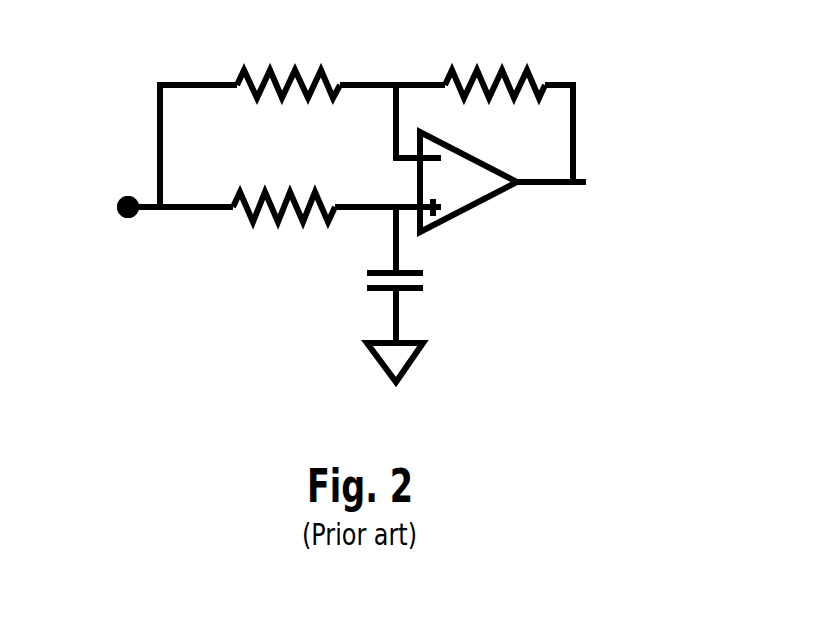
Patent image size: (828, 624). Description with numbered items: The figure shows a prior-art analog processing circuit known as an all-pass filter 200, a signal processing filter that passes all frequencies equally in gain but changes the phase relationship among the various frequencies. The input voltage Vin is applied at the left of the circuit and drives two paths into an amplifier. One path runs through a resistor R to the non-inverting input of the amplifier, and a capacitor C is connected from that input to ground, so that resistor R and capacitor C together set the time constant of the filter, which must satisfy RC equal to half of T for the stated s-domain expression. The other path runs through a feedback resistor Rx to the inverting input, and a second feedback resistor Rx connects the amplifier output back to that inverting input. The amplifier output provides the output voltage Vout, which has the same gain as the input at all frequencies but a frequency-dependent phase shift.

The all-pass filter 200 is at (376, 193).
The feedback resistor Rx is at (391, 51).
The resistor R is at (284, 181).
The capacitor C is at (416, 261).
The input voltage Vin is at (91, 210).
The output voltage Vout is at (601, 185).